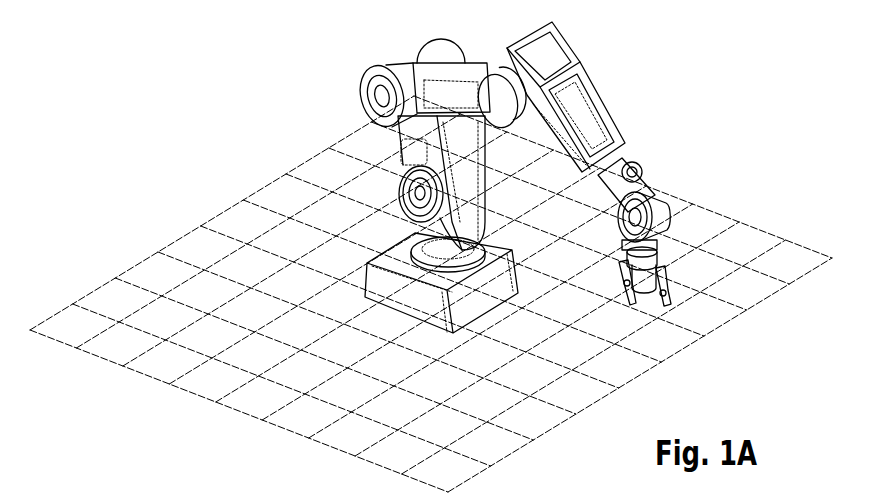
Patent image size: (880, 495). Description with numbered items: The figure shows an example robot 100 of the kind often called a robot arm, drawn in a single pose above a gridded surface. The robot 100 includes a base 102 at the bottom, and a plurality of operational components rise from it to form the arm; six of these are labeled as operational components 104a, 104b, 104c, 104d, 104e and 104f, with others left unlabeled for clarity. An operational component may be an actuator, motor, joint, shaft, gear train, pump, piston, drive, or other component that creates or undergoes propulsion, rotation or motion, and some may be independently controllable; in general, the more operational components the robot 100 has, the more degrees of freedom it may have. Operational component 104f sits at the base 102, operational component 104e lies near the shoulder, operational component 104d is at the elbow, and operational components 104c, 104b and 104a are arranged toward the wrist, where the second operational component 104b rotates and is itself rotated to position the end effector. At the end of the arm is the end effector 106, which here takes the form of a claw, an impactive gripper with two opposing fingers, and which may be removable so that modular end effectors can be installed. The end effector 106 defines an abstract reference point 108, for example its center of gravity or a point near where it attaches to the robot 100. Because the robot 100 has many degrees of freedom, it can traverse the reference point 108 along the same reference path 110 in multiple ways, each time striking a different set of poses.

The robot 100 is at (331, 74).
The base 102 is at (410, 303).
The operational component 104a is at (653, 241).
The second operational component 104b is at (633, 217).
The operational component 104c is at (636, 170).
The operational component 104d is at (492, 100).
The operational component 104e is at (428, 193).
The operational component 104f is at (419, 257).
The end effector 106 is at (653, 268).
The reference point 108 is at (640, 276).
The reference path 110 is at (500, 358).